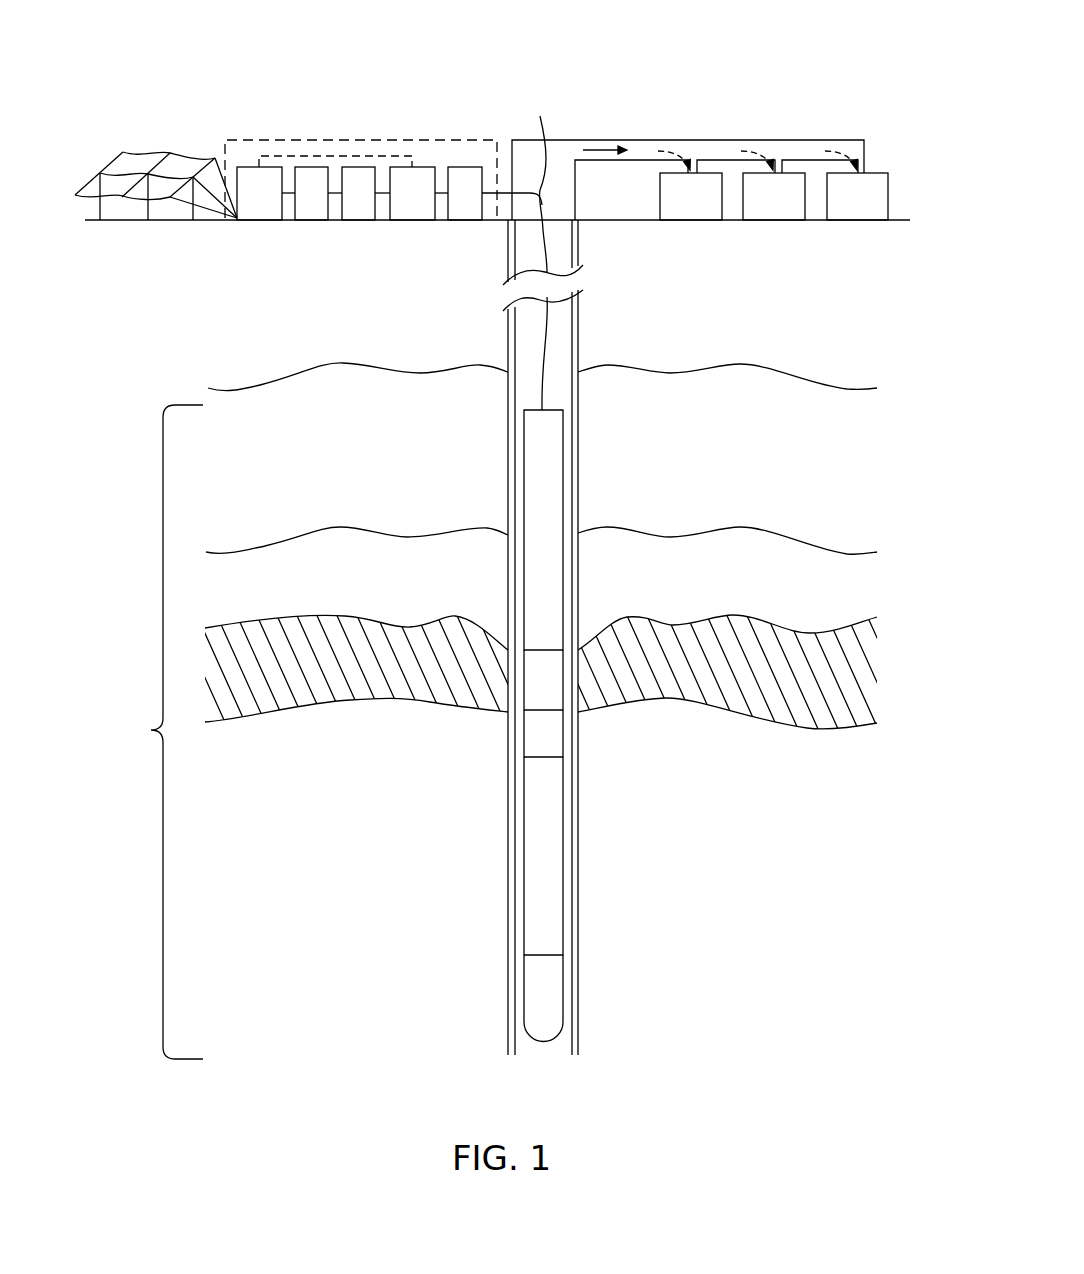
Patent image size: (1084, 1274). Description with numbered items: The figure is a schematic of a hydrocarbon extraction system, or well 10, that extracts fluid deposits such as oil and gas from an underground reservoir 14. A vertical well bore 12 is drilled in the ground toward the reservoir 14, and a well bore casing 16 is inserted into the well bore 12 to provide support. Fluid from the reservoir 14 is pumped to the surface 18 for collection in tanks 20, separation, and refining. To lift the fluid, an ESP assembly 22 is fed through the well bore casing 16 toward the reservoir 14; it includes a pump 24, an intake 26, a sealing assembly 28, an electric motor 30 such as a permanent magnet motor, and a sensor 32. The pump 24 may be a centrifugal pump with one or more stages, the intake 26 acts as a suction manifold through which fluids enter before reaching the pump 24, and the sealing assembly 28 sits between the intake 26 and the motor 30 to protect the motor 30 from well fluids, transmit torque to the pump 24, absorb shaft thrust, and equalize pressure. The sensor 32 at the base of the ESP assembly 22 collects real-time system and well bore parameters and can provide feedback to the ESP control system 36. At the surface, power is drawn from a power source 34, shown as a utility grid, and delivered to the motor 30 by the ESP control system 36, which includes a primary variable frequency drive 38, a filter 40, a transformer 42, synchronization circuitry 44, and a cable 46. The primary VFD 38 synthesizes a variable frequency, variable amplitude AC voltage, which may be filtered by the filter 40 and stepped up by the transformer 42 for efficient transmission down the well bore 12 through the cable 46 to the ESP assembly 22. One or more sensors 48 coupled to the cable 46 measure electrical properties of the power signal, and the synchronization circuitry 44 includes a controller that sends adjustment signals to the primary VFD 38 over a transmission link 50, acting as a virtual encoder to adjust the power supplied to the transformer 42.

The well 10 is at (665, 57).
The well bore 12 is at (543, 376).
The underground reservoir 14 is at (408, 667).
The well bore casing 16 is at (508, 332).
The surface 18 is at (611, 218).
The tanks 20 is at (690, 222).
The ESP assembly 22 is at (151, 732).
The pump 24 is at (563, 447).
The intake 26 is at (524, 680).
The sealing assembly 28 is at (524, 732).
The electric motor 30 is at (563, 828).
The sensor 32 is at (563, 990).
The power source 34 is at (178, 130).
The ESP control system 36 is at (422, 140).
The primary variable frequency drive 38 is at (252, 210).
The filter 40 is at (313, 176).
The transformer 42 is at (360, 176).
The synchronization circuitry 44 is at (413, 205).
The cable 46 is at (517, 249).
The sensor 48 is at (461, 168).
The transmission link 50 is at (281, 156).